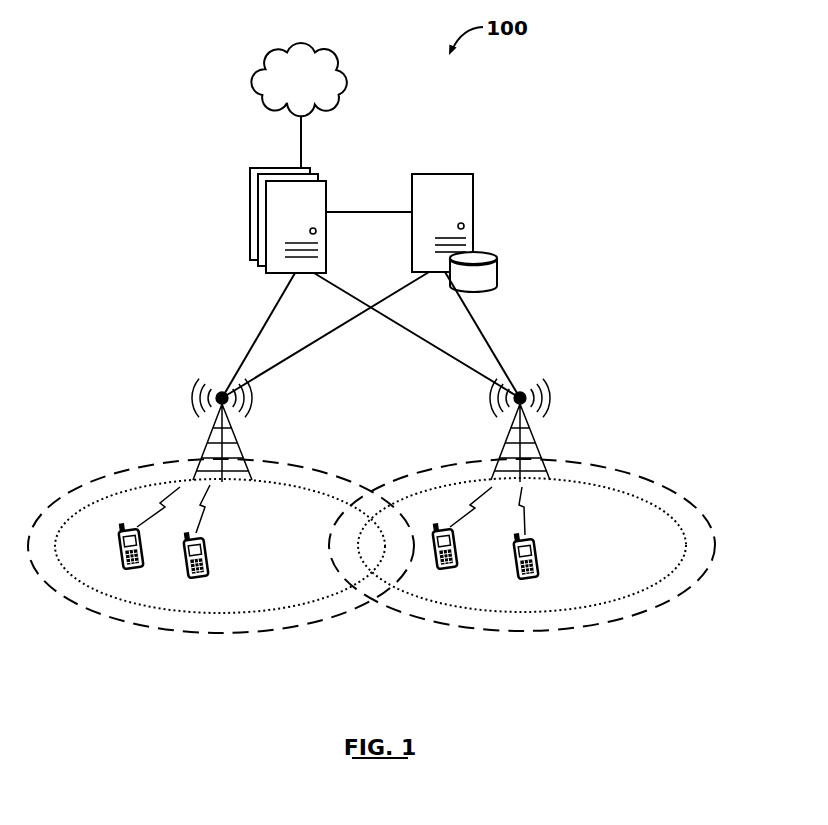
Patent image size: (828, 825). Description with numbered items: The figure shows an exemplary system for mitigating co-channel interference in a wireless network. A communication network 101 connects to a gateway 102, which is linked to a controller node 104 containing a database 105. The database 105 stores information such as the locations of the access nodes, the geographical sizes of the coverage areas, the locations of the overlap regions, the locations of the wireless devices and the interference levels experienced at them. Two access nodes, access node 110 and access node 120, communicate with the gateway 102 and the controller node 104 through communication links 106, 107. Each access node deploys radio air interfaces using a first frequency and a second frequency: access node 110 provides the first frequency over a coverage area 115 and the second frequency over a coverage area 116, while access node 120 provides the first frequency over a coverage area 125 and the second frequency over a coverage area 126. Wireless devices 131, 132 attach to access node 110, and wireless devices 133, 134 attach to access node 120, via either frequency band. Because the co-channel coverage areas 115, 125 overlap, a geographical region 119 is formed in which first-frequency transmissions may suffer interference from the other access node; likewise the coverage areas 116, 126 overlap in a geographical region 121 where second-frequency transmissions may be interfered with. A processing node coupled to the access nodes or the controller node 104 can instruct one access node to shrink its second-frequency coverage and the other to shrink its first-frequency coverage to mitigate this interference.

The communication network 101 is at (288, 93).
The gateway 102 is at (268, 170).
The controller node 104 is at (473, 174).
The database 105 is at (497, 255).
The communication link 106 is at (272, 312).
The communication link 107 is at (360, 304).
The access node 110 is at (206, 447).
The coverage area 115 is at (143, 605).
The coverage area 116 is at (165, 629).
The geographical region 119 is at (378, 553).
The access node 120 is at (535, 447).
The geographical region 121 is at (348, 528).
The coverage area 125 is at (607, 602).
The coverage area 126 is at (590, 626).
The wireless device 131 is at (121, 543).
The wireless device 132 is at (193, 578).
The wireless device 133 is at (449, 568).
The wireless device 134 is at (538, 552).